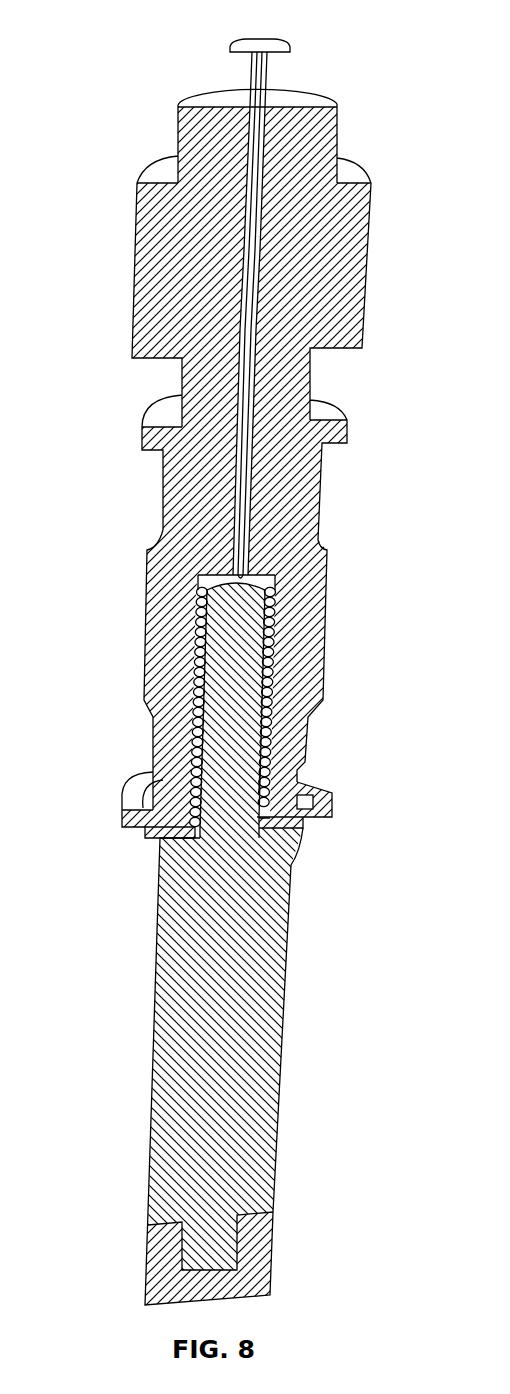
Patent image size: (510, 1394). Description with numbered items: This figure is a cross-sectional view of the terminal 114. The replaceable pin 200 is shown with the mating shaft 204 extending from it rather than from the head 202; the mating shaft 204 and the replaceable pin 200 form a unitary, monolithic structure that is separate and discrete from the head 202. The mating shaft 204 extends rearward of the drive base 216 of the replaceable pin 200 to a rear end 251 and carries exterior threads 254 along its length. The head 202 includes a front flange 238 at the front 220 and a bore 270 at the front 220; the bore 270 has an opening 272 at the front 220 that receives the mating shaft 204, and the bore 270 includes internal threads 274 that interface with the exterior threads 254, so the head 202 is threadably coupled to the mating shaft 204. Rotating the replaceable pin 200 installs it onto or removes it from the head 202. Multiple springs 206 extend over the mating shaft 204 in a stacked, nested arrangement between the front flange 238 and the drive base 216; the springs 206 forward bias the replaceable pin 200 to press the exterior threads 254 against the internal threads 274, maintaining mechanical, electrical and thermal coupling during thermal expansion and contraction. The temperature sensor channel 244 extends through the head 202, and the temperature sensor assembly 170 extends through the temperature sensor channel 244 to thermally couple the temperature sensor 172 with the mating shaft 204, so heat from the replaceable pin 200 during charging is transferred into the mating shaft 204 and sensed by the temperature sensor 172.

The terminal 114 is at (368, 125).
The temperature sensor assembly 170 is at (233, 44).
The temperature sensor channel 244 is at (262, 162).
The rear end 251 is at (315, 535).
The head 202 is at (316, 614).
The exterior threads 254 is at (272, 668).
The mating shaft 204 is at (253, 702).
The temperature sensor 172 is at (240, 579).
The bore 270 is at (265, 737).
The internal threads 274 is at (254, 782).
The front flange 238 is at (124, 816).
The front 220 is at (152, 830).
The spring 206 is at (304, 824).
The drive base 216 is at (296, 848).
The opening 272 is at (192, 824).
The replaceable pin 200 is at (275, 975).